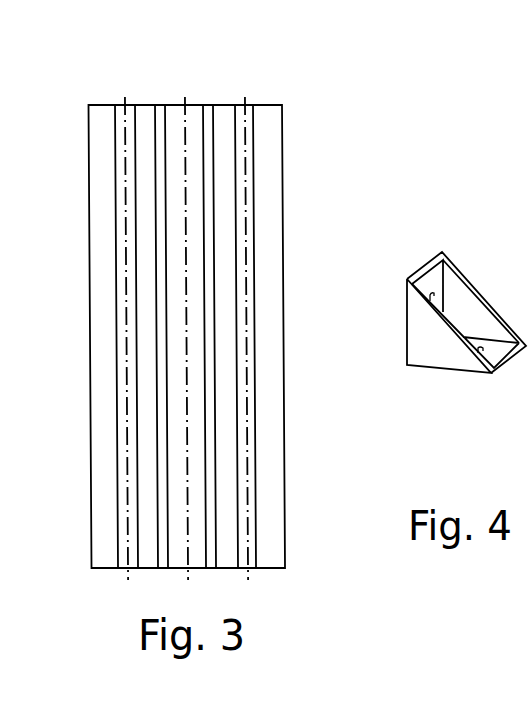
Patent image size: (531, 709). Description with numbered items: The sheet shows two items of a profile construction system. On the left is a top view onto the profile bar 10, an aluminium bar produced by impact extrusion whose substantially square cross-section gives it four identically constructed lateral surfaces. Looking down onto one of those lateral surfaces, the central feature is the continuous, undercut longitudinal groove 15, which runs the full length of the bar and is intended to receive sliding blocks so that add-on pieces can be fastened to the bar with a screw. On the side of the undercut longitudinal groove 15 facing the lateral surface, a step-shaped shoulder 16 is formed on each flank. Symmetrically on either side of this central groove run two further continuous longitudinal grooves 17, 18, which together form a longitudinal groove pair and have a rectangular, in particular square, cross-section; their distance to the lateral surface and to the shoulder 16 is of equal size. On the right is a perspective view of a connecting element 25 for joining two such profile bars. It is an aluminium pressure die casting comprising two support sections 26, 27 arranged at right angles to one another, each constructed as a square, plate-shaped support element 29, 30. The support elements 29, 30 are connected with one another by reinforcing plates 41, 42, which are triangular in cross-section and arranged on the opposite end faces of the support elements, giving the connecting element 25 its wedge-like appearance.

In FIG. 3, the profile bar 10 is at (150, 302).
In FIG. 3, the undercut longitudinal groove 15 is at (195, 100).
In FIG. 3, the step-shaped shoulder 16 is at (158, 108).
In FIG. 3, the longitudinal groove 17 is at (121, 100).
In FIG. 3, the longitudinal groove 18 is at (246, 100).
In FIG. 4, the connecting element 25 is at (429, 318).
In FIG. 4, the support section 26 is at (440, 262).
In FIG. 4, the support element 29 is at (428, 266).
In FIG. 4, the support section 27 is at (465, 365).
In FIG. 4, the support element 30 is at (510, 362).
In FIG. 4, the reinforcing plate 41 is at (414, 330).
In FIG. 4, the reinforcing plate 42 is at (444, 314).